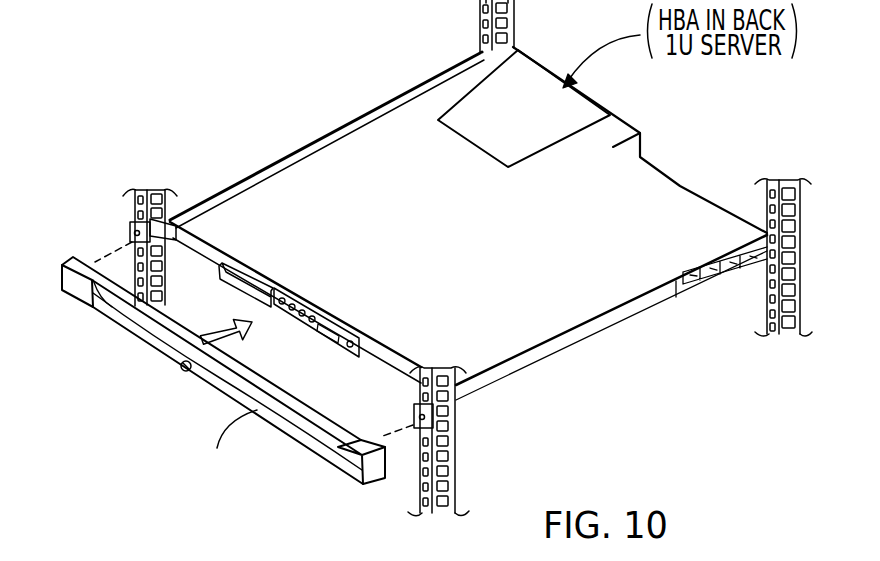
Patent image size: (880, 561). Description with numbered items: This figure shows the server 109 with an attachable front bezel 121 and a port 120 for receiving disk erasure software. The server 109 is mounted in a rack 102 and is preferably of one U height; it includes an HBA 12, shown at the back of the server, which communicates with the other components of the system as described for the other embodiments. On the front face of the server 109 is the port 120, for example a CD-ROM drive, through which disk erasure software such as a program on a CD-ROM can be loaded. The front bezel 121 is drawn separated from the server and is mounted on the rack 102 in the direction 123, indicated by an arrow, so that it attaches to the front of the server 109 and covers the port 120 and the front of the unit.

The HBA 12 is at (510, 117).
The rack 102 is at (765, 288).
The Server 109 is at (548, 284).
The port 120 is at (238, 291).
The front bezel 121 is at (139, 339).
The direction 123 is at (236, 332).